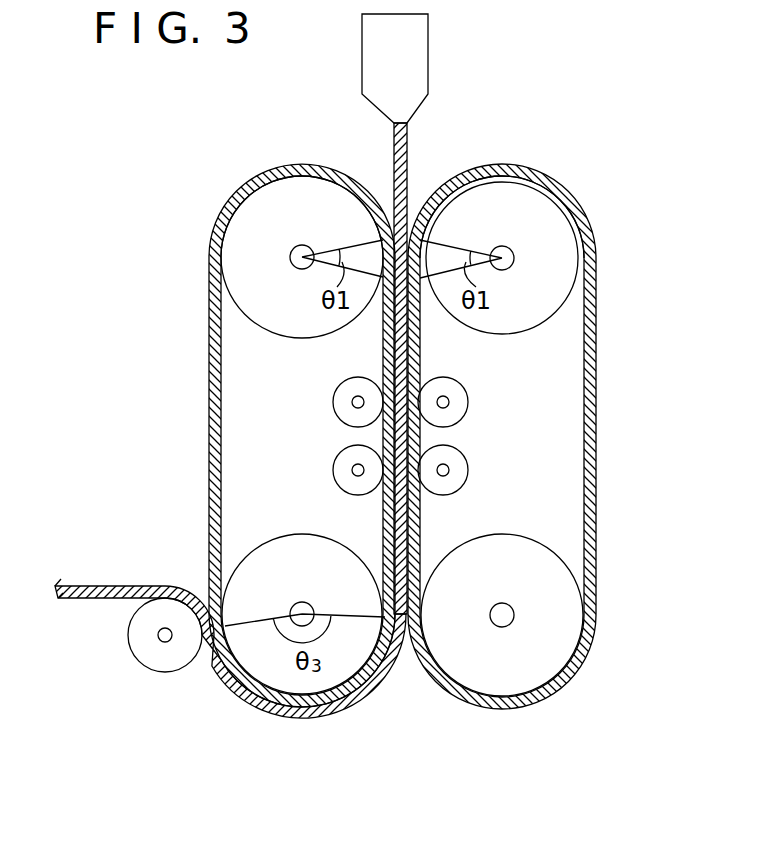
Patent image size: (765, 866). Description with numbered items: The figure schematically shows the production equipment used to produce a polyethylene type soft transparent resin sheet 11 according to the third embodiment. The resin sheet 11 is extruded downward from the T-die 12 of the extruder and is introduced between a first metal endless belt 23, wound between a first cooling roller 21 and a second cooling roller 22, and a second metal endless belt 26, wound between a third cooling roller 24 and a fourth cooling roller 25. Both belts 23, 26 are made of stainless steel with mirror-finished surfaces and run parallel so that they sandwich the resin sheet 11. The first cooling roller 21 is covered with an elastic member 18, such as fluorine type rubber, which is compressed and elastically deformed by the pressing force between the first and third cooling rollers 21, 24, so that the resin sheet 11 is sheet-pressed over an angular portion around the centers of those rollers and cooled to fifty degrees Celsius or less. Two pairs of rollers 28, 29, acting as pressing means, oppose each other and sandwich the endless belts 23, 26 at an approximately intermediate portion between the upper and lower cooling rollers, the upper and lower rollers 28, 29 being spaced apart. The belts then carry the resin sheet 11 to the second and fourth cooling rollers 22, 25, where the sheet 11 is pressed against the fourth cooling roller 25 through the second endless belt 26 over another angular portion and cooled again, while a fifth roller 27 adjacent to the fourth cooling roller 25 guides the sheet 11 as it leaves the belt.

The polyethylene type soft transparent resin sheet 11 is at (406, 158).
The T-die 12 is at (416, 62).
The elastic member 18 is at (527, 183).
The first cooling roller 21 is at (548, 220).
The second cooling roller 22 is at (580, 626).
The first metal endless belt 23 is at (597, 404).
The third cooling roller 24 is at (234, 232).
The fourth cooling roller 25 is at (272, 664).
The second metal endless belt 26 is at (214, 403).
The fifth roller 27 is at (155, 656).
The pair of rollers 28 is at (334, 402).
The pair of rollers 29 is at (334, 470).